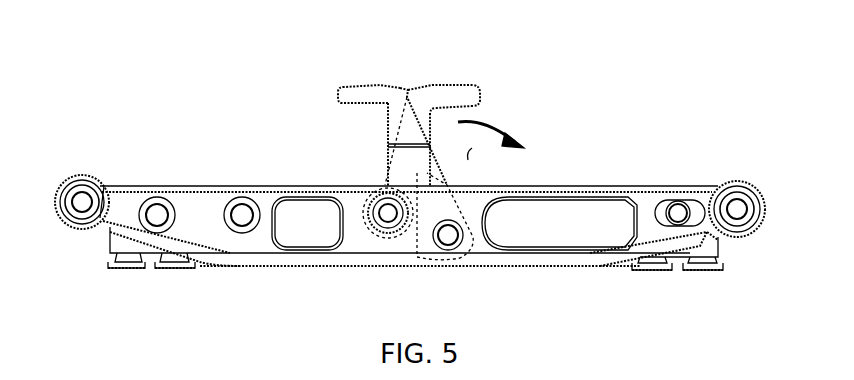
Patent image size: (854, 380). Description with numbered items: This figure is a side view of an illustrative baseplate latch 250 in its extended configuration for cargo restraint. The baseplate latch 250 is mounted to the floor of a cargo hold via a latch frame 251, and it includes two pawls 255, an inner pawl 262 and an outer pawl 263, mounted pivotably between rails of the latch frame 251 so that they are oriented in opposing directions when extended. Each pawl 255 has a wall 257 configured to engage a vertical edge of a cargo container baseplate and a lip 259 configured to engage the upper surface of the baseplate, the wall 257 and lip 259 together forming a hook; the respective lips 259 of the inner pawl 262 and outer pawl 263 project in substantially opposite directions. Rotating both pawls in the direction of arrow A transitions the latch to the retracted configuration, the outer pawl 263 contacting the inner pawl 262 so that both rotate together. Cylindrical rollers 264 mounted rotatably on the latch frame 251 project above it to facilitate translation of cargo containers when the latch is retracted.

The baseplate latch 250 is at (345, 41).
The latch frame 251 is at (200, 212).
The pawl 255 is at (393, 95).
The wall 257 is at (384, 133).
The lip 259 is at (352, 96).
The inner pawl 262 is at (444, 135).
The outer pawl 263 is at (418, 174).
The cylindrical roller 264 is at (80, 178).